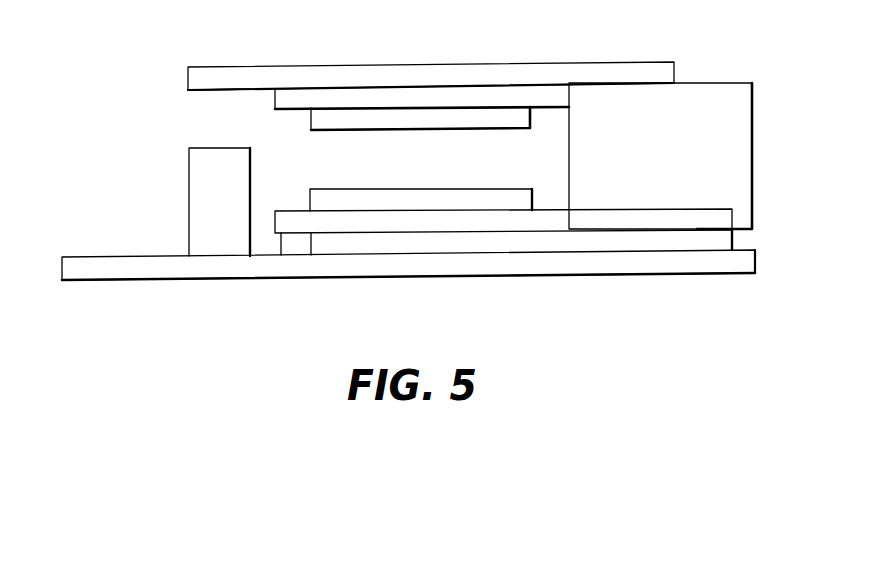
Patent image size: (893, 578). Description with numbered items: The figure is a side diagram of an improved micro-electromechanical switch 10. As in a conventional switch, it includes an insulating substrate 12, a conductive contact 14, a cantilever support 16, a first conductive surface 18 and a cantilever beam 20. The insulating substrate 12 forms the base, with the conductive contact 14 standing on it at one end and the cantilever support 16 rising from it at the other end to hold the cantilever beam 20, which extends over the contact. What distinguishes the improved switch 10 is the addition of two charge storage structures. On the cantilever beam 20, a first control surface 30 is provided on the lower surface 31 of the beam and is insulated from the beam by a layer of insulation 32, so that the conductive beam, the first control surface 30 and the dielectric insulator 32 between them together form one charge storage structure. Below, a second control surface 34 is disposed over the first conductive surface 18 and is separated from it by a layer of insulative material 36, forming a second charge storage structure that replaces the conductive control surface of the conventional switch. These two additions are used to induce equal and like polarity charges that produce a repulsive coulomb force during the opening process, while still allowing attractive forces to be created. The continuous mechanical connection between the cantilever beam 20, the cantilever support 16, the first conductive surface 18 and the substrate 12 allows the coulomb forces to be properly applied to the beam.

The improved switch 10 is at (158, 45).
The insulating substrate 12 is at (518, 262).
The conductive contact 14 is at (205, 223).
The cantilever support 16 is at (703, 98).
The first conductive surface 18 is at (335, 245).
The cantilever beam 20 is at (585, 73).
The first control surface 30 is at (480, 130).
The lower surface 31 is at (193, 92).
The layer of insulation 32 is at (282, 111).
The second control surface 34 is at (310, 200).
The layer of insulative material 36 is at (282, 237).